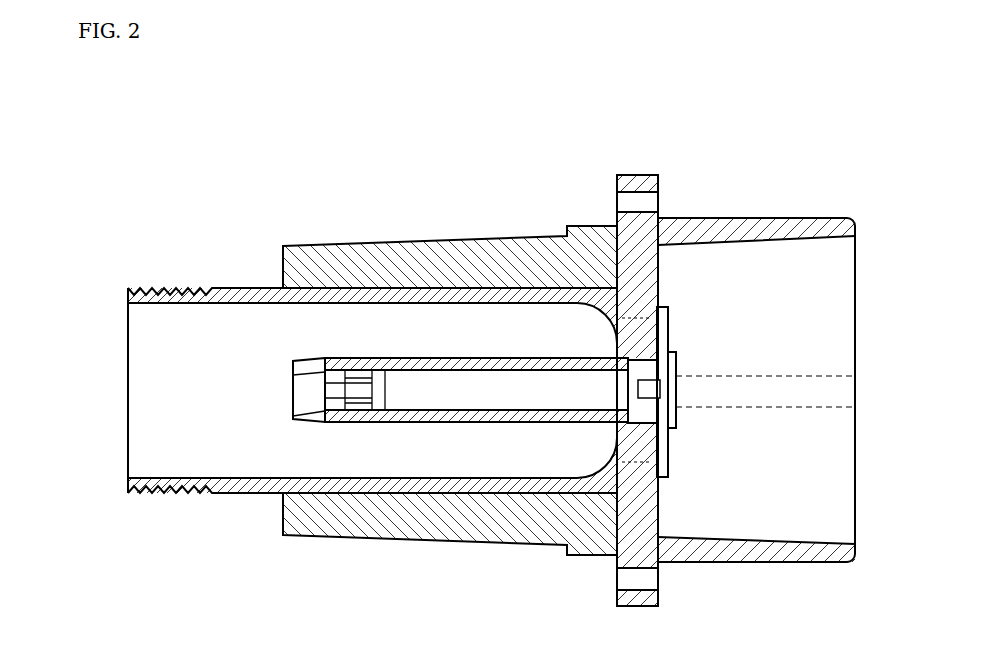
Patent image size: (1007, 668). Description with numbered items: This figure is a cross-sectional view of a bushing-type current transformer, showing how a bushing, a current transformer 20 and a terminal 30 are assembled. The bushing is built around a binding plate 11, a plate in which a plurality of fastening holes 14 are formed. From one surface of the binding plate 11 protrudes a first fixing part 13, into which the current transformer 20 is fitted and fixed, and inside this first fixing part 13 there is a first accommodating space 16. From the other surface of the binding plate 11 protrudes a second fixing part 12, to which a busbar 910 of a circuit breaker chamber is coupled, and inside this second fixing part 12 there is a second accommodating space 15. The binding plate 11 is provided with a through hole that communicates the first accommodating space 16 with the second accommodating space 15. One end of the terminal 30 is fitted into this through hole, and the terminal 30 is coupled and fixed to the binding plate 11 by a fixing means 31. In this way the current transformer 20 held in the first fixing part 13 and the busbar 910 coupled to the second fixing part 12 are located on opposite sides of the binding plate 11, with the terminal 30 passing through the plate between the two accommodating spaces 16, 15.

The binding plate 11 is at (638, 172).
The second fixing part 12 is at (778, 222).
The first fixing part 13 is at (250, 287).
The fastening hole 14 is at (655, 212).
The second accommodating space 15 is at (817, 297).
The first accommodating space 16 is at (153, 405).
The current transformer 20 is at (330, 234).
The terminal 30 is at (398, 448).
The fixing means 31 is at (633, 470).
The busbar 910 is at (828, 388).